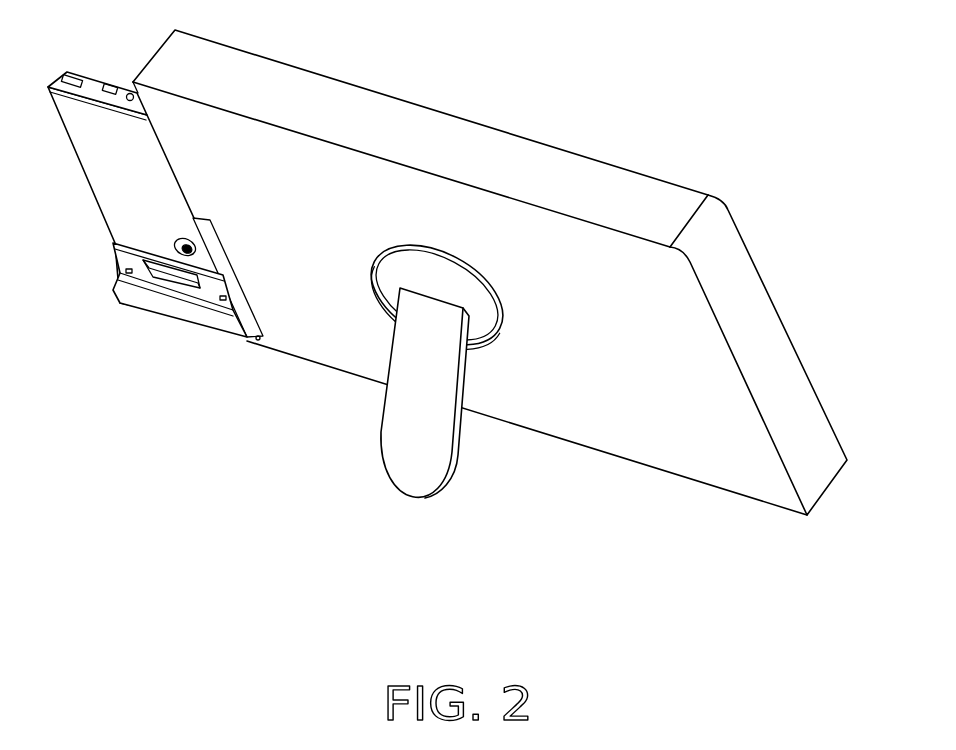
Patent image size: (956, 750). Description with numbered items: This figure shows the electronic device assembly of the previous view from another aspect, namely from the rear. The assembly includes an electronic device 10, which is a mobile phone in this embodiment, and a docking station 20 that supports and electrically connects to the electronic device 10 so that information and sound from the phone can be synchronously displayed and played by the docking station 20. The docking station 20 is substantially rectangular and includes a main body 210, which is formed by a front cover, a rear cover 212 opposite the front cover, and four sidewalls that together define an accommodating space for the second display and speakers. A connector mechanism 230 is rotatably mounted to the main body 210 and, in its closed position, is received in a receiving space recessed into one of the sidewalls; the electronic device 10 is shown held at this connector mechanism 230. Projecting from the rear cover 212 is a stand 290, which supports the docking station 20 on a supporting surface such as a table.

The electronic device 10 is at (118, 173).
The docking station 20 is at (490, 296).
The main body 210 is at (788, 413).
The rear cover 212 is at (358, 317).
The connector mechanism 230 is at (212, 307).
The stand 290 is at (412, 448).